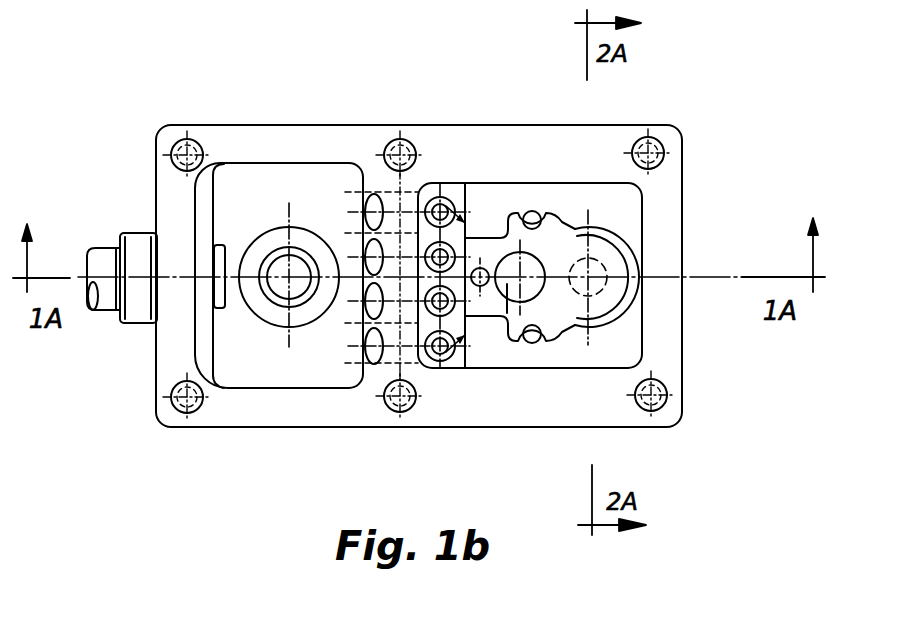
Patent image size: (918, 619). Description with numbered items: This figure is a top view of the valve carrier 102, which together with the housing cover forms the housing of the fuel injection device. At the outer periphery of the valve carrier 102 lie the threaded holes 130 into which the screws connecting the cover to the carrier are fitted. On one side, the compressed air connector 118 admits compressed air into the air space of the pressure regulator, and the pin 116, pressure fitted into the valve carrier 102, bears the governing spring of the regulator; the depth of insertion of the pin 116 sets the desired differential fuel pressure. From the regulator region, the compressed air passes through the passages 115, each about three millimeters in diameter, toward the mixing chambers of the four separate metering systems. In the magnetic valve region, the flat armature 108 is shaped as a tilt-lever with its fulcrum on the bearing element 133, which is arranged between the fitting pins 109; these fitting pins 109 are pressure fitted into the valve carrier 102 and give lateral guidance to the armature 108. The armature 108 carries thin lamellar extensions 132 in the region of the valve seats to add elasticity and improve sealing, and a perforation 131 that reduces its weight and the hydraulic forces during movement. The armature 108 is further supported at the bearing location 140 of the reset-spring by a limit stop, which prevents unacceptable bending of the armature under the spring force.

The valve carrier 102 is at (668, 226).
The flat armature 108 is at (613, 292).
The fitting pins 109 is at (534, 211).
The passages 115 is at (363, 240).
The pin 116 is at (272, 313).
The connector 118 is at (101, 248).
The threaded holes 130 is at (182, 138).
The perforation 131 is at (498, 348).
The lamellar extensions 132 is at (450, 208).
The bearing element 133 is at (534, 262).
The bearing location 140 is at (483, 266).